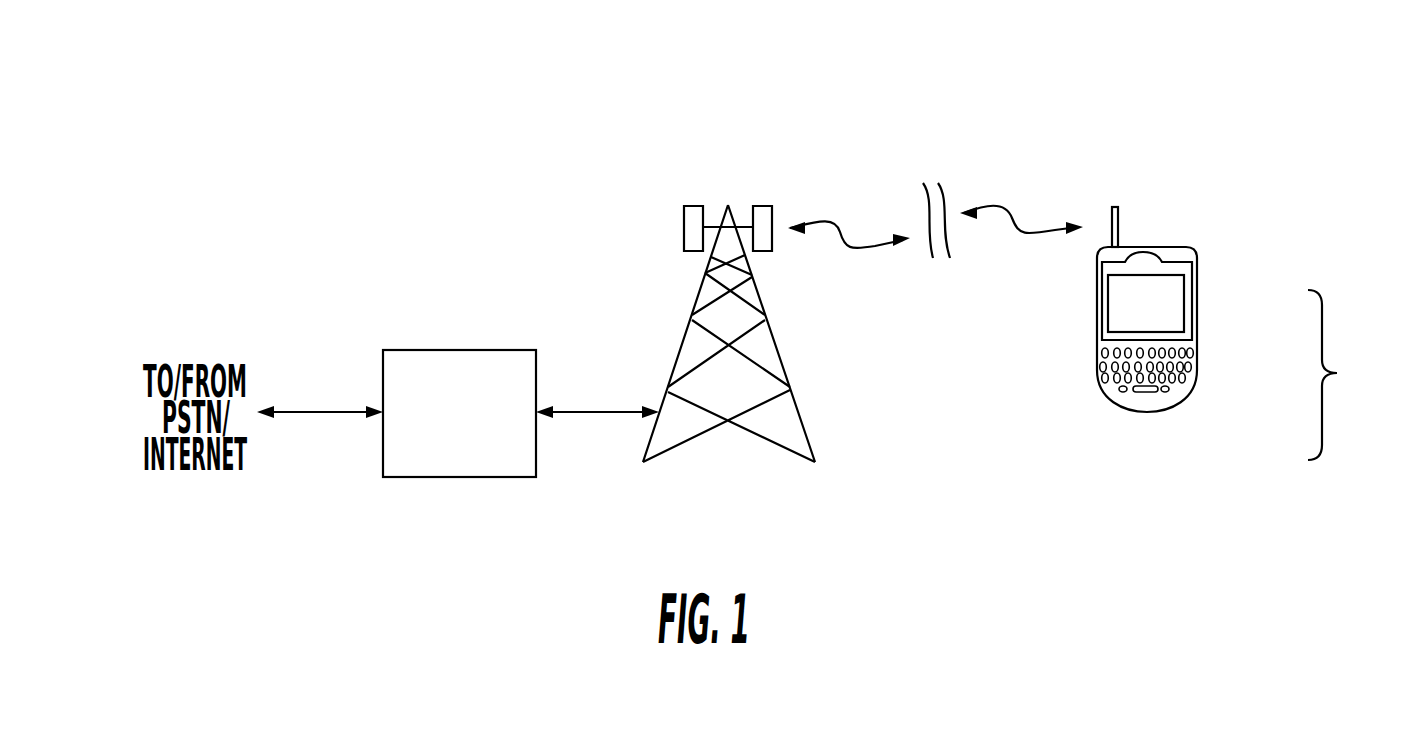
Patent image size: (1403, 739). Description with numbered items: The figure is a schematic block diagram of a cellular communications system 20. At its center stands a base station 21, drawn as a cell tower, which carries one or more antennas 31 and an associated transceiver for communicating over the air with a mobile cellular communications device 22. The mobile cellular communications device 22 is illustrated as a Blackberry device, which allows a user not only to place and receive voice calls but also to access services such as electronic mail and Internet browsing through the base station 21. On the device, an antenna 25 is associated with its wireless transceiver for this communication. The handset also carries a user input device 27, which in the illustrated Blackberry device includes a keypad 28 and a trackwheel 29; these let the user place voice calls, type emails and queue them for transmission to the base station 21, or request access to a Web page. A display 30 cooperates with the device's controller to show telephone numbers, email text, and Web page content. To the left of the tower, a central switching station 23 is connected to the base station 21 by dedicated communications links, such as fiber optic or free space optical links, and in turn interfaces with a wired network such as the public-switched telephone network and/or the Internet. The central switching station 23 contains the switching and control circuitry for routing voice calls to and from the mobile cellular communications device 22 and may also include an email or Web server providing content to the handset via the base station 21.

The cellular communications system 20 is at (404, 131).
The base station 21 is at (682, 348).
The mobile cellular communications device 22 is at (1174, 276).
The central switching station 23 is at (432, 350).
The antenna 25 is at (1108, 208).
The user input device 27 is at (1341, 375).
The keypad 28 is at (1180, 378).
The trackwheel 29 is at (1195, 283).
The display 30 is at (1117, 312).
The antennas 31 is at (752, 206).